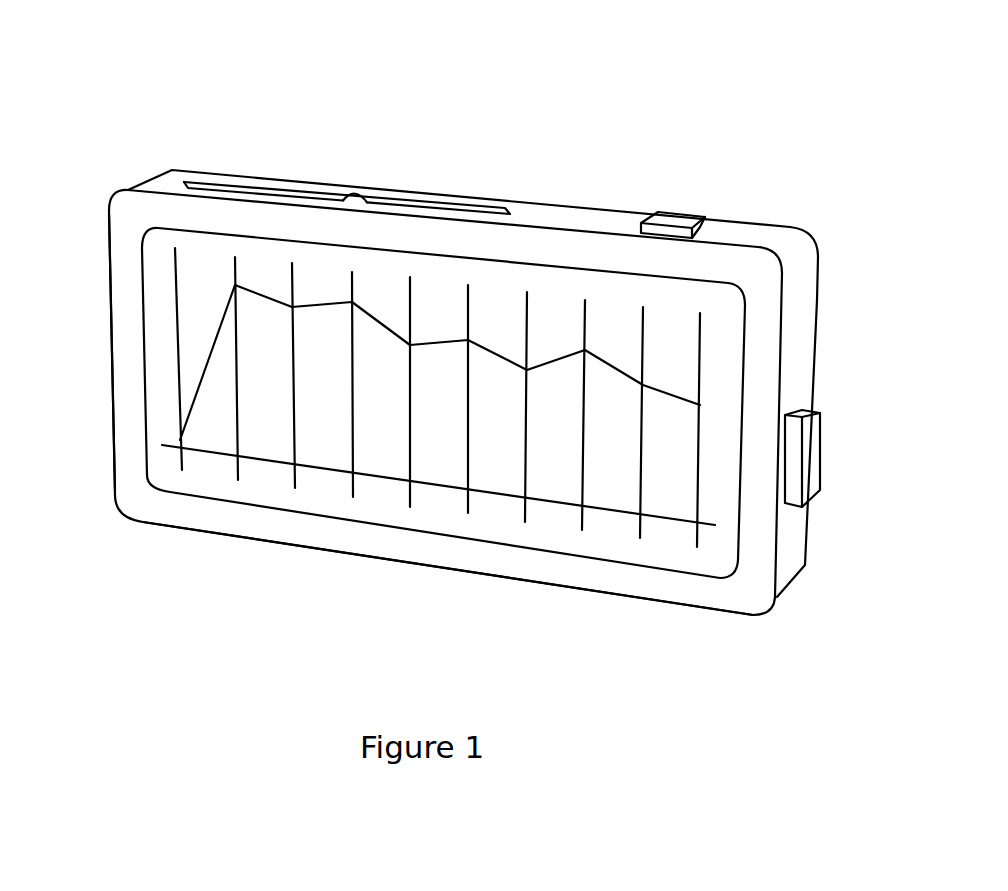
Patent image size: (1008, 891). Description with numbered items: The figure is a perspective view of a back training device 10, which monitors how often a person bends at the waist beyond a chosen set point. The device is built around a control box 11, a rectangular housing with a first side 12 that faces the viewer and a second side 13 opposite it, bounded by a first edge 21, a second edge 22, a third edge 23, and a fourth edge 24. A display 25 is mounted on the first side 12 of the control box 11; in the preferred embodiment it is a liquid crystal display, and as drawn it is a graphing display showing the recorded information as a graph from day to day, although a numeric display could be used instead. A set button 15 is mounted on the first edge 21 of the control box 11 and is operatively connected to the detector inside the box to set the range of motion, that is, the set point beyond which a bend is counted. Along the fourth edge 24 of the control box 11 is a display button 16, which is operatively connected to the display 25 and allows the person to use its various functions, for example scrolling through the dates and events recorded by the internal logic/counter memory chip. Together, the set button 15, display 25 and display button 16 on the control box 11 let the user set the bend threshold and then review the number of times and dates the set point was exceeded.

The back training device 10 is at (752, 205).
The control box 11 is at (520, 202).
The first side 12 is at (718, 593).
The second side 13 is at (817, 278).
The set button 15 is at (820, 455).
The display button 16 is at (678, 220).
The first edge 21 is at (793, 358).
The second edge 22 is at (117, 355).
The third edge 23 is at (430, 563).
The fourth edge 24 is at (173, 185).
The display 25 is at (273, 475).